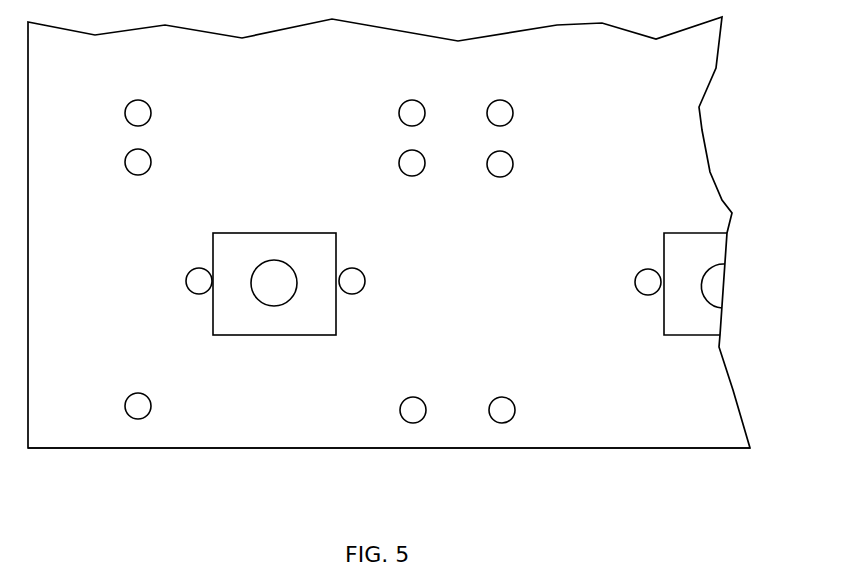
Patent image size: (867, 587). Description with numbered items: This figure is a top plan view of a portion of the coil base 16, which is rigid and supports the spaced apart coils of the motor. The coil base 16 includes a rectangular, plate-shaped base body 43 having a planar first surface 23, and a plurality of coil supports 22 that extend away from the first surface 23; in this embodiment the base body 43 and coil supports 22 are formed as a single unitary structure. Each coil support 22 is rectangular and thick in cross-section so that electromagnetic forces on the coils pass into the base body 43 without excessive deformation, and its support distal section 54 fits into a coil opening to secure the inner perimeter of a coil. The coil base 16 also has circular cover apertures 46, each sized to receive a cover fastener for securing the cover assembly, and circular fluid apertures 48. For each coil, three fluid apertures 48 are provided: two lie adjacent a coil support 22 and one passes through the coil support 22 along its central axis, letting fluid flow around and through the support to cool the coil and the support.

The coil base 16 is at (708, 117).
The coil support 22 is at (305, 312).
The first surface 23 is at (717, 390).
The base body 43 is at (641, 455).
The cover aperture 46 is at (139, 405).
The fluid aperture 48 is at (197, 284).
The support distal section 54 is at (320, 310).